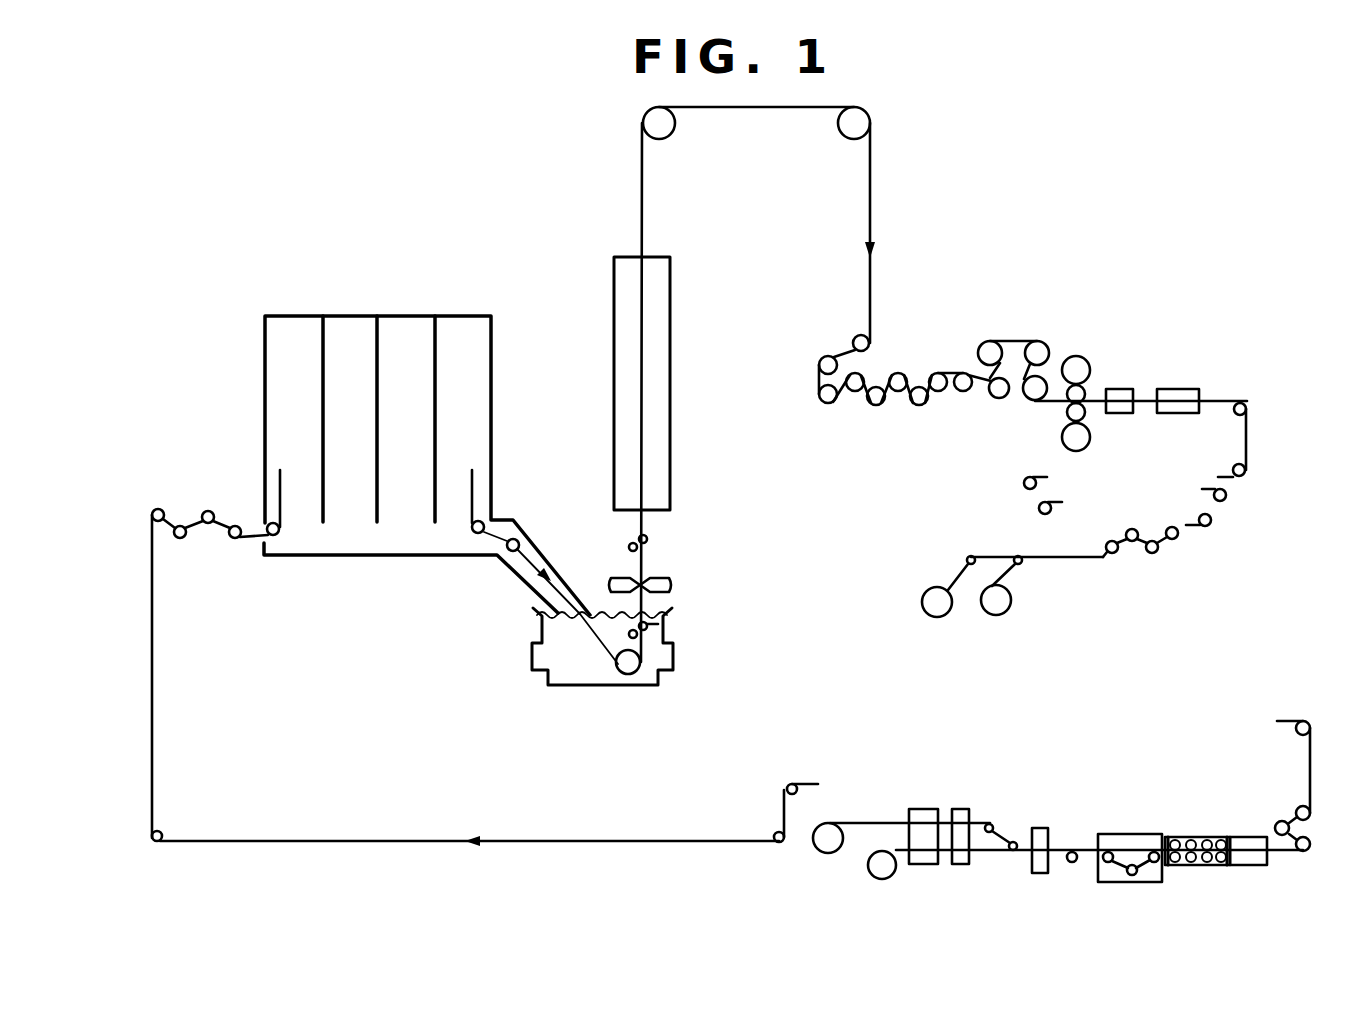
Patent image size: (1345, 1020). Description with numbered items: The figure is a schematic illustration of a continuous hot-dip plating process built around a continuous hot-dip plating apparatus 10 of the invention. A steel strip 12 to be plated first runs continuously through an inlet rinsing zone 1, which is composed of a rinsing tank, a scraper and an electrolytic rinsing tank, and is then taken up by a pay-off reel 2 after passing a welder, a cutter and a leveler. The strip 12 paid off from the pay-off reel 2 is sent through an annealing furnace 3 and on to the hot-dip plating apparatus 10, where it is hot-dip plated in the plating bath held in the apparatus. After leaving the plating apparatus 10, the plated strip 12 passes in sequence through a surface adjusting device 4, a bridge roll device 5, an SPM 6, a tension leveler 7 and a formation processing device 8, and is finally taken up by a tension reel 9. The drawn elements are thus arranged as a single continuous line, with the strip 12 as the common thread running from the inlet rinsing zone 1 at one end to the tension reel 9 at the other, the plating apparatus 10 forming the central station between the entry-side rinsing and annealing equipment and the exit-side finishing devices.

The inlet rinsing zone 1 is at (1213, 885).
The pay-off reel 2 is at (818, 843).
The annealing furnace 3 is at (292, 310).
The surface adjusting device 4 is at (680, 297).
The bridge roll device 5 is at (1011, 338).
The SPM 6 is at (1056, 441).
The tension leveler 7 is at (1118, 386).
The formation processing device 8 is at (1177, 386).
The tension reel 9 is at (928, 604).
The continuous hot-dip plating apparatus 10 is at (526, 662).
The steel strip 12 is at (378, 840).